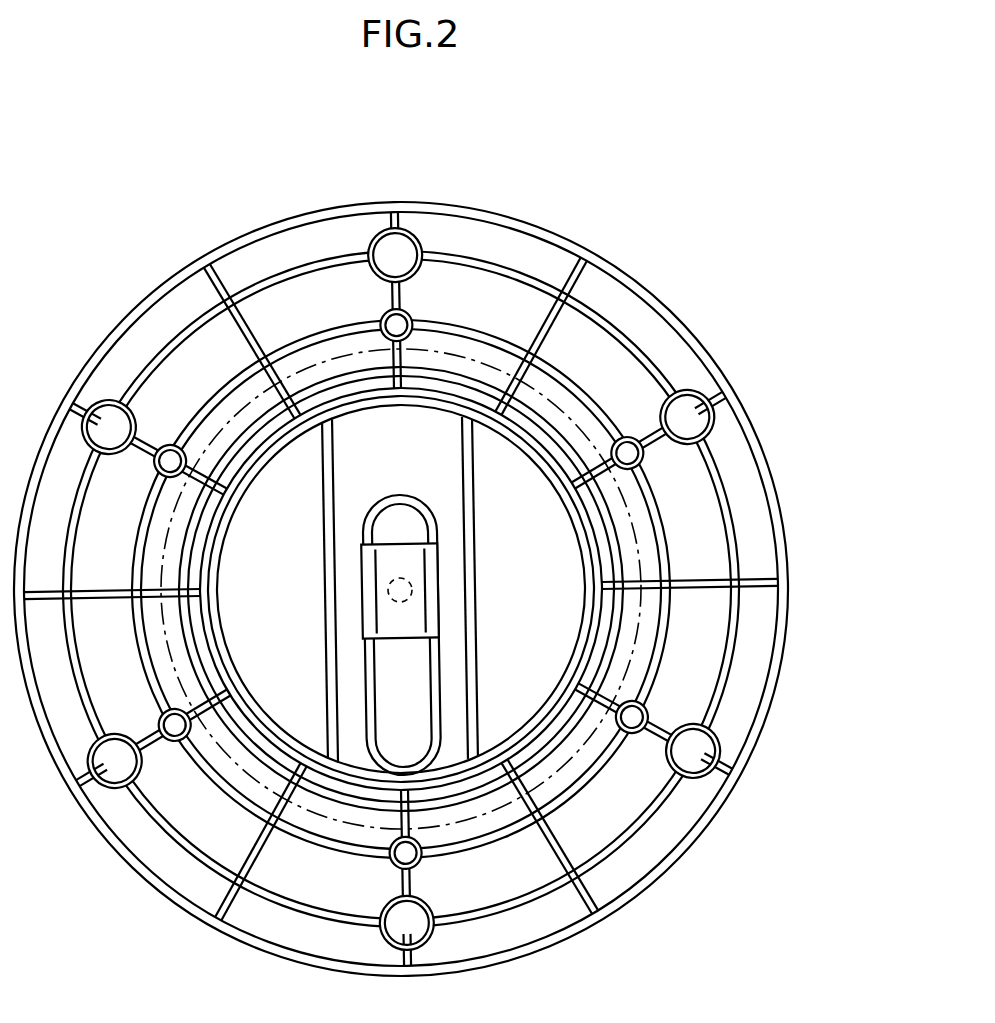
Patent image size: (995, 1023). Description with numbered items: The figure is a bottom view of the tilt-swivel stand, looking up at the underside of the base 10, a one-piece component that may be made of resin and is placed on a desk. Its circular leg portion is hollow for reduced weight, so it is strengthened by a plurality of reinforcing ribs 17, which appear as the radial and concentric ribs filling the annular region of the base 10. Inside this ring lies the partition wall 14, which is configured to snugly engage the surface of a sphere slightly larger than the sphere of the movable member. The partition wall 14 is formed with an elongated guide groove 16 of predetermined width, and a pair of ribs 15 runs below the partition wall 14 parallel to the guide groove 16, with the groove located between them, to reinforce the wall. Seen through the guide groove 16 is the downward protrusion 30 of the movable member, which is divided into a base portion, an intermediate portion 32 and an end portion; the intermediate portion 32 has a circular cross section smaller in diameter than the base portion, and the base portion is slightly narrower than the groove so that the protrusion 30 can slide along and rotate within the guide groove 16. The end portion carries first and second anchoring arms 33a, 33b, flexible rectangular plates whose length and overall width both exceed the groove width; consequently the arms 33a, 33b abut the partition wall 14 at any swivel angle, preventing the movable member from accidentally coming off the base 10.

The base 10 is at (578, 240).
The partition wall 14 is at (352, 495).
The ribs 15 is at (477, 543).
The guide groove 16 is at (384, 684).
The reinforcing ribs 17 is at (598, 403).
The protrusion 30 is at (390, 617).
The intermediate portion 32 is at (399, 577).
The first anchoring arm 33a is at (367, 585).
The second anchoring arm 33b is at (440, 572).